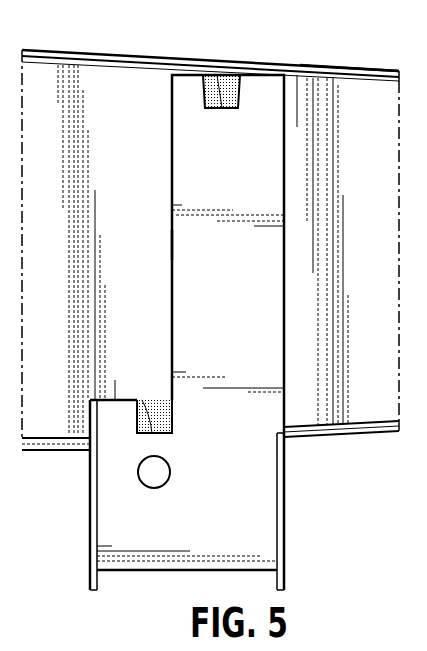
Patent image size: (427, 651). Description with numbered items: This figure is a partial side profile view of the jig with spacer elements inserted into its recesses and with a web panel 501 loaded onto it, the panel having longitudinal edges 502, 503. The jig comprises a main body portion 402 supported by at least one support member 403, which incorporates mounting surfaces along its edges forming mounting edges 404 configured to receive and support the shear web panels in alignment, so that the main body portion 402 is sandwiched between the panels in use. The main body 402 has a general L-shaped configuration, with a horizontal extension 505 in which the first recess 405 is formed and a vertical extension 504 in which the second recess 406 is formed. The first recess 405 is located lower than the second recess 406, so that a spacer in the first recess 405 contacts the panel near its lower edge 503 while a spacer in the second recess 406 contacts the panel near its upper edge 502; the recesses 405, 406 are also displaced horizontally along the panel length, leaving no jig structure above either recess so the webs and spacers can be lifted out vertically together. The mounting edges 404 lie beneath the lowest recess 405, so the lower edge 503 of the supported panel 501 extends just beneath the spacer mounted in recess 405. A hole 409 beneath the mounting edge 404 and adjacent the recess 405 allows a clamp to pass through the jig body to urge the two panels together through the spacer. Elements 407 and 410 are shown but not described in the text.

The web panel 501 is at (339, 64).
The longitudinal edge 502 is at (134, 50).
The longitudinal edge 503 is at (368, 438).
The main body portion 402 is at (143, 163).
The support member 403 is at (89, 513).
The mounting edges 404 is at (95, 442).
The first recess 405 is at (142, 400).
The second recess 406 is at (217, 75).
The channel side wall 407 is at (170, 244).
The hole 409 is at (162, 480).
The step 410 is at (97, 400).
The vertical extension 504 is at (248, 294).
The horizontal extension 505 is at (140, 518).